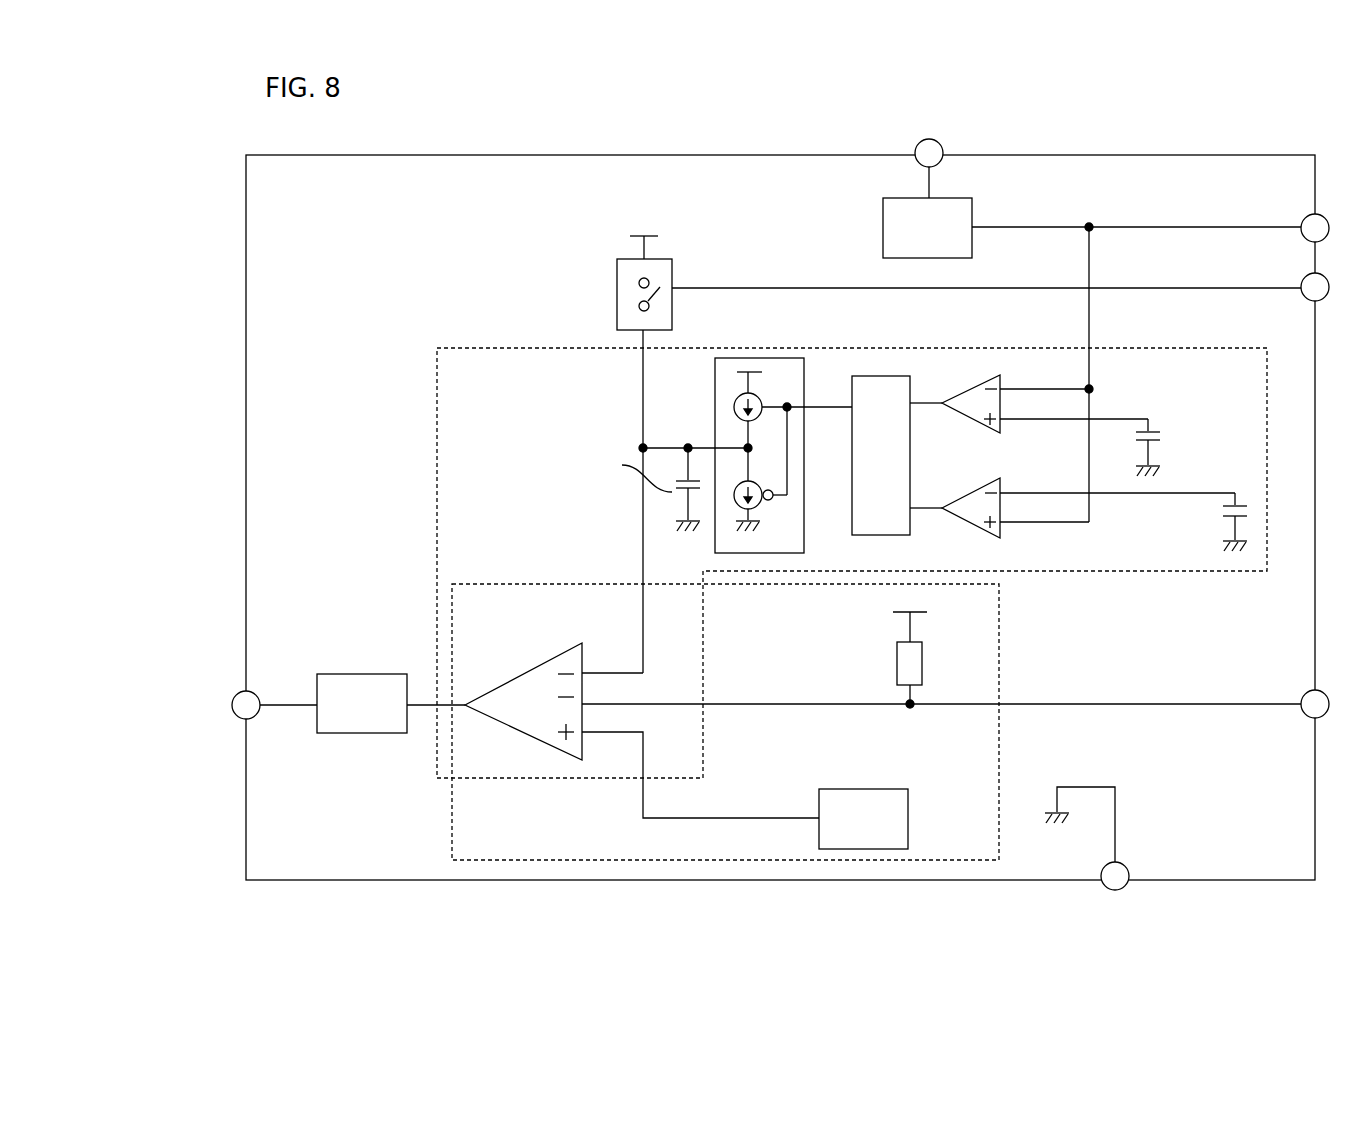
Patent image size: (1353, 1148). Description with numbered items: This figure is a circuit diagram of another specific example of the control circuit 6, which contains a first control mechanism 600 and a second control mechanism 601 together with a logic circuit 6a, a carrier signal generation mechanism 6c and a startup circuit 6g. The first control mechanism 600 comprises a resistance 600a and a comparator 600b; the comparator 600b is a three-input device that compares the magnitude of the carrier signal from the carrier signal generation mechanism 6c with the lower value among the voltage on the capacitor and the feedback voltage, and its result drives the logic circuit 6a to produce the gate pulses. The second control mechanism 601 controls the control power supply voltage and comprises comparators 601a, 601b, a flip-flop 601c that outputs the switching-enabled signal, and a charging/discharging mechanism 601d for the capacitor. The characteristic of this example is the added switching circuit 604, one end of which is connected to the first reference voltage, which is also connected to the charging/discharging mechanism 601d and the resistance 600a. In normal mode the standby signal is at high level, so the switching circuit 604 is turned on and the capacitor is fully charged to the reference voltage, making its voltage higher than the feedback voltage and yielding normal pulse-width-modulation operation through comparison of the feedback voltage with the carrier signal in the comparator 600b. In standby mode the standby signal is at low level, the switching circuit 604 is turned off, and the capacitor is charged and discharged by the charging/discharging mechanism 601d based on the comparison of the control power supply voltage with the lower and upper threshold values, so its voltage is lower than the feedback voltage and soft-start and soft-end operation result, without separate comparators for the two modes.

The control circuit 6 is at (390, 894).
The logic circuit 6a is at (378, 658).
The carrier signal generation mechanism 6c is at (868, 775).
The startup circuit 6g is at (868, 228).
The first control mechanism 600 is at (1000, 630).
The resistance 600a is at (893, 655).
The comparator 600b is at (540, 658).
The second control mechanism 601 is at (1118, 580).
The comparator 601a is at (992, 392).
The comparator 601b is at (972, 493).
The flip-flop 601c is at (875, 360).
The charging/discharging mechanism 601d is at (703, 408).
The switching circuit 604 is at (598, 289).